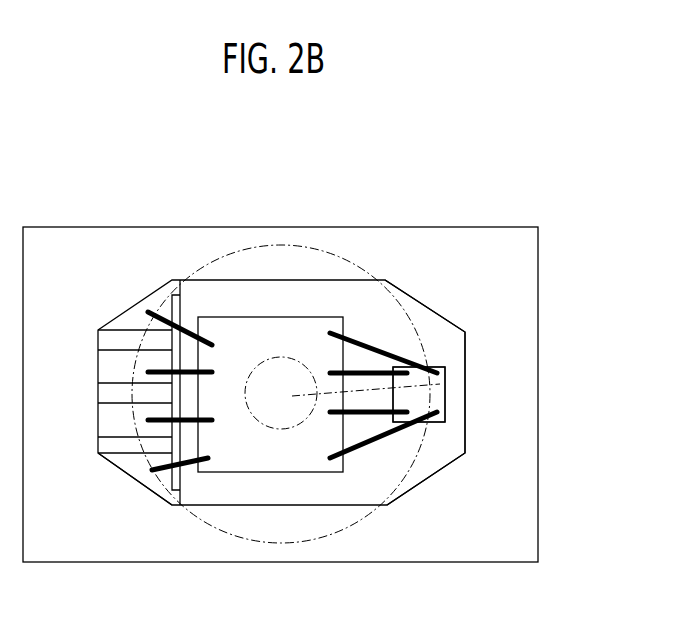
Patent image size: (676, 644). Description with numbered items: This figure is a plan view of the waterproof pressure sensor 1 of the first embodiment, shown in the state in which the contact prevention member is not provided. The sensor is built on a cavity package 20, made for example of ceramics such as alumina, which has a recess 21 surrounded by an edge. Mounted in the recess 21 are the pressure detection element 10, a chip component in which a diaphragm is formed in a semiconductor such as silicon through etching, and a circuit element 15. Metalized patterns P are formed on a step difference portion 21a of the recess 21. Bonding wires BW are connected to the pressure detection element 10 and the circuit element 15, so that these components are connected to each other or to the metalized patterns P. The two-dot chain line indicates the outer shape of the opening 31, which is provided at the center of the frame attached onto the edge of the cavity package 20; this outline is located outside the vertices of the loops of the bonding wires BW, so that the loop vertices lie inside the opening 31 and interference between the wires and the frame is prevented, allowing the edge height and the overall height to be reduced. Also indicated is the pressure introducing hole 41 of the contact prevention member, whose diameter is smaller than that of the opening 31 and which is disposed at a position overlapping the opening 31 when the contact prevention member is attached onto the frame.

The waterproof pressure sensor 1 is at (486, 206).
The pressure detection element 10 is at (440, 378).
The circuit element 15 is at (255, 330).
The cavity package 20 is at (508, 272).
The recess 21 is at (410, 475).
The step difference portion 21a is at (170, 507).
The opening 31 is at (423, 443).
The pressure introducing hole 41 is at (447, 389).
The bonding wires BW is at (187, 328).
The metalized patterns P is at (137, 305).